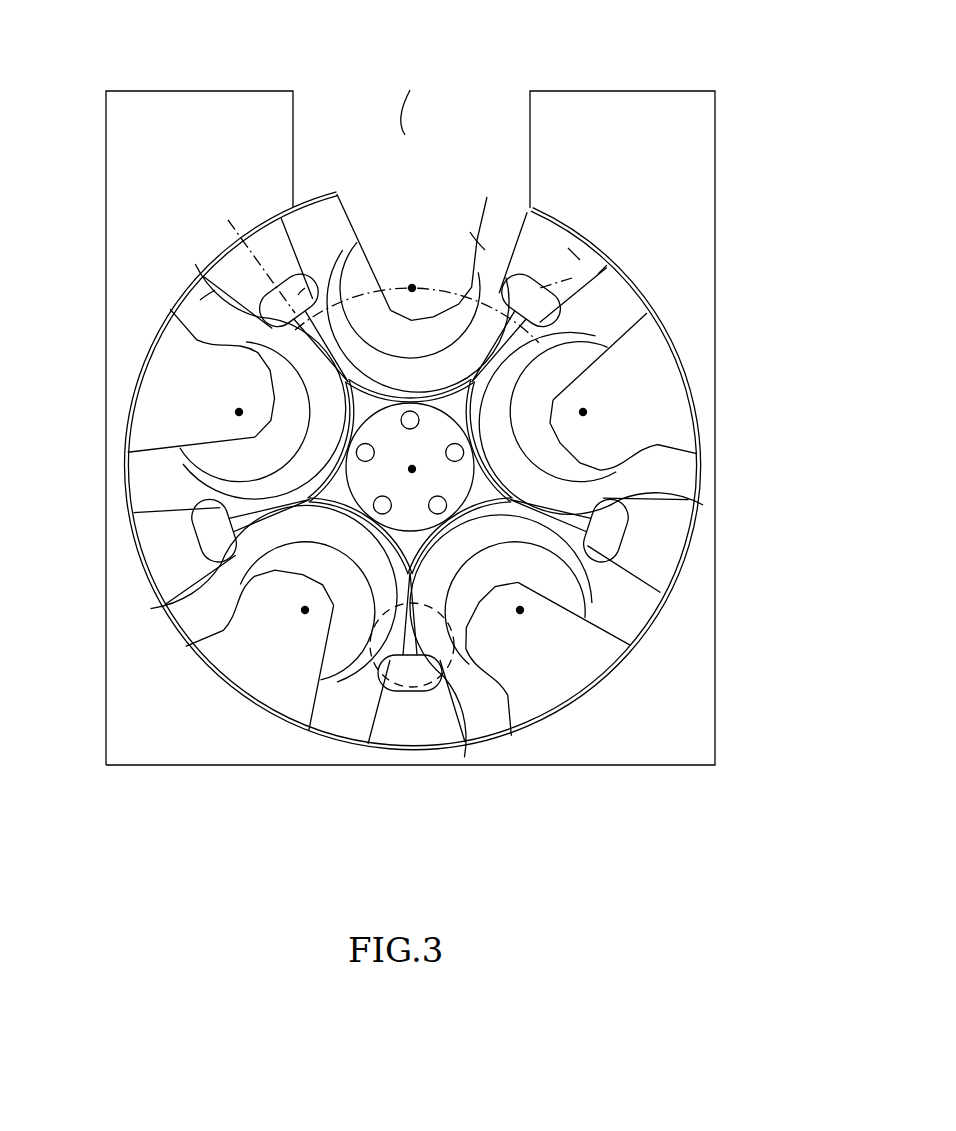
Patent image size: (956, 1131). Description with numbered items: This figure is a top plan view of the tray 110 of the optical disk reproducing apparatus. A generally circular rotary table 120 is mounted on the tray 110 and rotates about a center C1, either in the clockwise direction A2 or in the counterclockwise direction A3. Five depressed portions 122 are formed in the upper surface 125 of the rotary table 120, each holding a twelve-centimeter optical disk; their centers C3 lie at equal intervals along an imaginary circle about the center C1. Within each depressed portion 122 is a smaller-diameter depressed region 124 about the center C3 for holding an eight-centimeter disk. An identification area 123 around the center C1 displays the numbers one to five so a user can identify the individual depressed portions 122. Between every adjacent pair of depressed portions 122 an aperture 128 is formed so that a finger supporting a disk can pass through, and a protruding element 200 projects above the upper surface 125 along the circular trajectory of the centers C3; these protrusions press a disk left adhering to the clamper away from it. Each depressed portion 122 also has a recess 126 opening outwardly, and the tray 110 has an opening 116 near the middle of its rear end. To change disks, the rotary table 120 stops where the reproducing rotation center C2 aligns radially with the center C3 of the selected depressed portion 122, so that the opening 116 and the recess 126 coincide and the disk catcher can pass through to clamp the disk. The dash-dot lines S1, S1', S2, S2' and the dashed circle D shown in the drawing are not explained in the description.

The tray 110 is at (608, 91).
The opening 116 is at (405, 110).
The rotary table 120 is at (375, 715).
The depressed portion 122 is at (355, 345).
The identification area 123 is at (408, 512).
The smaller-diameter depressed region 124 is at (470, 232).
The upper surface of the rotary table 125 is at (568, 248).
The recess 126 is at (424, 280).
The aperture 128 is at (298, 295).
The protruding element 200 is at (565, 307).
The center of the rotary table C1 is at (436, 480).
The reproducing rotation center C2 is at (413, 284).
The center of the depressed portion C3 is at (391, 521).
The diameter D is at (412, 690).
The direction S1 is at (242, 283).
The direction S1' is at (579, 287).
The direction S2 is at (240, 254).
The direction S2' is at (327, 430).
The clockwise direction A2 is at (624, 212).
The counterclockwise direction A3 is at (177, 228).